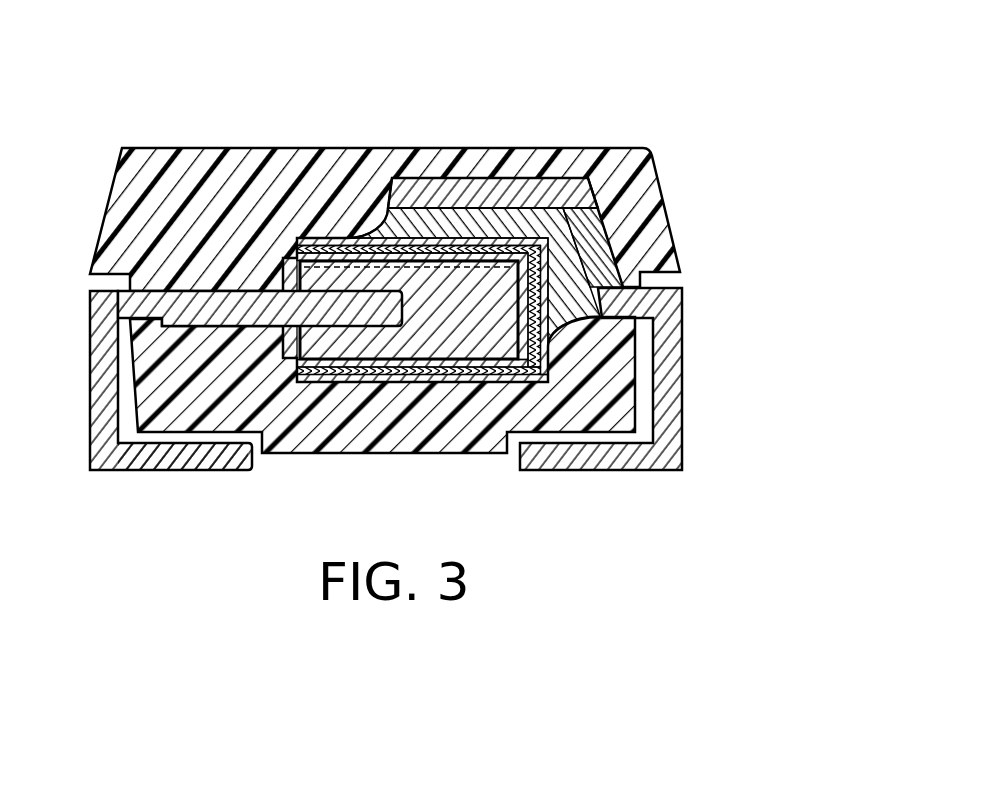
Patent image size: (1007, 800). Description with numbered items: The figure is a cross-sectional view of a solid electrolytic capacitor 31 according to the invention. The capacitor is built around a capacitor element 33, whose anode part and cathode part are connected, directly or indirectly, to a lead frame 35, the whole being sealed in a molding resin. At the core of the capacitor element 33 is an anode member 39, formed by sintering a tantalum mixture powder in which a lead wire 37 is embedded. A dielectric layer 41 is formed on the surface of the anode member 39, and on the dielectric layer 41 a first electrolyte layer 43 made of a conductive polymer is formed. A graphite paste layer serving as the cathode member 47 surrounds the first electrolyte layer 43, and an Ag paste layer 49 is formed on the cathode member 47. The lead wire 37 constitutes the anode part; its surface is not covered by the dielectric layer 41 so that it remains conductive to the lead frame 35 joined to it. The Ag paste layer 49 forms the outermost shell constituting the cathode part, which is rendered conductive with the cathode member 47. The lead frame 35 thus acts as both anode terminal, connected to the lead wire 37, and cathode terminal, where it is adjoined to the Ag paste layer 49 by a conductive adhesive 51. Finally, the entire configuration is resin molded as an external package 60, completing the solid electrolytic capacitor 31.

The solid electrolytic capacitor 31 is at (355, 263).
The capacitor element 33 is at (315, 226).
The lead frame 35 is at (470, 178).
The lead wire 37 is at (205, 297).
The anode member 39 is at (290, 240).
The dielectric layer 41 is at (243, 440).
The first electrolyte layer 43 is at (360, 381).
The cathode member 47 is at (410, 372).
The Ag paste layer 49 is at (462, 364).
The conductive adhesive 51 is at (597, 195).
The external package 60 is at (280, 170).